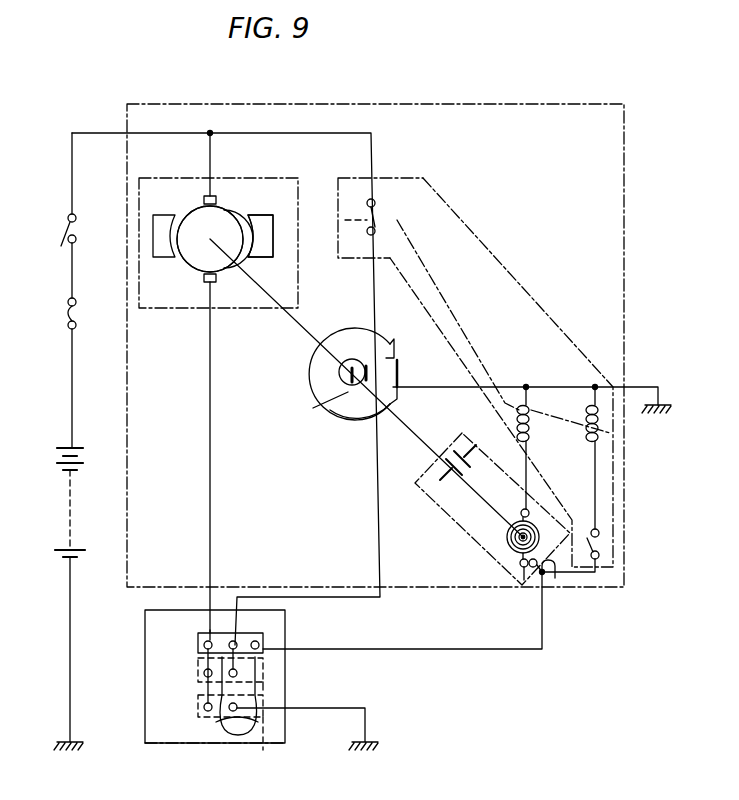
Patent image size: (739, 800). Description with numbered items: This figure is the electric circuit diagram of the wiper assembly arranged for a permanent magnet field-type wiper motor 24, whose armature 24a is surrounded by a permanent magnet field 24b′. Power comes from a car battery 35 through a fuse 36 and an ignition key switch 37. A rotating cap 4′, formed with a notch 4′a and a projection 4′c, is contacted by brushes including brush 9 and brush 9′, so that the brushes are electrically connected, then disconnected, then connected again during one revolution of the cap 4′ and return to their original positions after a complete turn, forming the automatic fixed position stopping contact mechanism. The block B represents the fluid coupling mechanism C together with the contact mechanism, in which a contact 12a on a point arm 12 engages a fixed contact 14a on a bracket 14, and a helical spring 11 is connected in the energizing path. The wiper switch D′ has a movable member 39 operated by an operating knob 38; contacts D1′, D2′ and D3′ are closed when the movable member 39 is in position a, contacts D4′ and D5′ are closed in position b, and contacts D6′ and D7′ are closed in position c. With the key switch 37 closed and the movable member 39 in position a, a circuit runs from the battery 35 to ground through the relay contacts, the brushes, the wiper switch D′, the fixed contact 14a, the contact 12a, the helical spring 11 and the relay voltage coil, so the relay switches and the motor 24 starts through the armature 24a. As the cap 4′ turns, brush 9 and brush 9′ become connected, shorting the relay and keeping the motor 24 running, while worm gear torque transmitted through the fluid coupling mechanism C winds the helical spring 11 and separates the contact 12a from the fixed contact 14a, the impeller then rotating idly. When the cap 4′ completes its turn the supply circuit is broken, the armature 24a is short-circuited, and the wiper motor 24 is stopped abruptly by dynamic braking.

The wiper motor 24 is at (238, 178).
The armature 24a is at (193, 264).
The permanent magnet field 24b′ is at (265, 215).
The ignition key switch 37 is at (78, 230).
The fuse 36 is at (78, 321).
The car battery 35 is at (72, 480).
The notch 4′a is at (394, 357).
The brush 9 is at (392, 352).
The brush 9′ is at (400, 368).
The projection 4′c is at (281, 411).
The cap 4′ is at (349, 420).
The helical spring 11 is at (530, 512).
The point arm 12 is at (516, 553).
The contact 12a is at (519, 565).
The bracket 14 is at (556, 580).
The fixed contact 14a is at (524, 580).
The block B is at (448, 526).
The fluid coupling mechanism C is at (452, 478).
The movable member 39 is at (286, 636).
The contact D1′ is at (204, 645).
The contact D2′ is at (233, 641).
The contact D3′ is at (252, 633).
The contact D4′ is at (204, 674).
The contact D5′ is at (237, 674).
The contact D6′ is at (204, 708).
The relay contact D7′ is at (237, 708).
The wiper switch D′ is at (145, 745).
The operating knob 38 is at (228, 720).
The position a is at (205, 633).
The position b is at (265, 681).
The position c is at (267, 746).